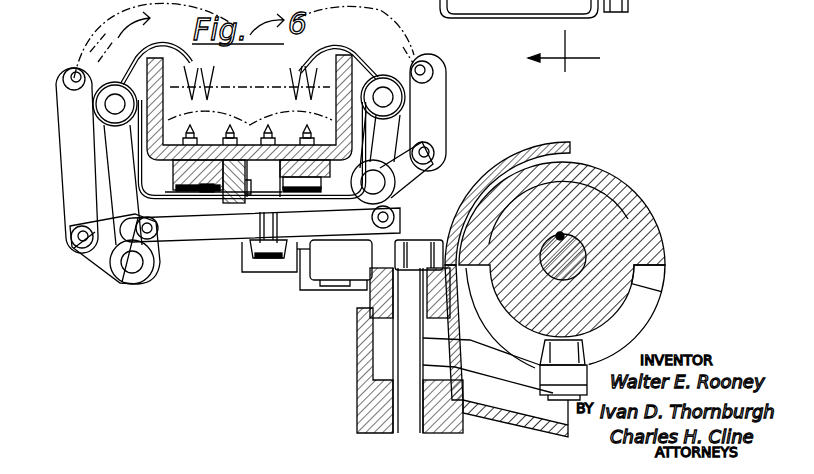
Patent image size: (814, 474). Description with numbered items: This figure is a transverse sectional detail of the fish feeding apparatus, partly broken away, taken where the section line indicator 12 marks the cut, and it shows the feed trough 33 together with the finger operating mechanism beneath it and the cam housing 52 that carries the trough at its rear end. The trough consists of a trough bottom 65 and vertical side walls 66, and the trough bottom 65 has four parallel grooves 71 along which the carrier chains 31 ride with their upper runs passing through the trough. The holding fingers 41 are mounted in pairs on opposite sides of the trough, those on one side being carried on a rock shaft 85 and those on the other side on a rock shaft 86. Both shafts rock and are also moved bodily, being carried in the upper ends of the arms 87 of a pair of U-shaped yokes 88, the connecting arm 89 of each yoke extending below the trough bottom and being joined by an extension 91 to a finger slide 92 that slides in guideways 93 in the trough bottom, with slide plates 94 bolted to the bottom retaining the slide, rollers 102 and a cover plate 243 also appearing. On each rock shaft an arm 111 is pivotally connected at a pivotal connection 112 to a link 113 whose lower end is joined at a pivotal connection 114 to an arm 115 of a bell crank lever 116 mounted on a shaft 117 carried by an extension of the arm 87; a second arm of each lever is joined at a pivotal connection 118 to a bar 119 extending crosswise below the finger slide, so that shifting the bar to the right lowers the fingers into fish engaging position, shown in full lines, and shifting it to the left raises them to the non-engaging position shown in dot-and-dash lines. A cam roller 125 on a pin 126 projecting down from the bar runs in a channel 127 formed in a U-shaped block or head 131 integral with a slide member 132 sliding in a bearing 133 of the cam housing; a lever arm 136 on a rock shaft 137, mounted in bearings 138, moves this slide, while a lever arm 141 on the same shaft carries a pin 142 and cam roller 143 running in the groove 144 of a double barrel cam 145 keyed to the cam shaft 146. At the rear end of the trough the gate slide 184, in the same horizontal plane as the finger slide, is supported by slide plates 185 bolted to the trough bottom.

The section line indicator 12 is at (580, 51).
The cover plate 243 is at (534, 9).
The carrier chains 31 is at (214, 144).
The feed trough 33 is at (262, 74).
The holding fingers 41 is at (160, 46).
The cam housing 52 is at (566, 142).
The trough bottom 65 is at (176, 165).
The vertical side walls 66 is at (158, 86).
The parallel grooves 71 is at (240, 138).
The rock shaft 85 is at (398, 96).
The rock shaft 86 is at (112, 105).
The arms 87 is at (120, 128).
The U-shaped yokes 88 is at (321, 183).
The connecting arm 89 is at (176, 206).
The extension 91 is at (263, 178).
The finger slide 92 is at (285, 145).
The guideways 93 is at (180, 186).
The slide plates 94 is at (320, 197).
The rollers 102 is at (115, 92).
The arm 111 is at (430, 50).
The pivotal connection 112 is at (70, 74).
The link 113 is at (70, 157).
The pivotal connection 114 is at (72, 240).
The arm 115 is at (92, 252).
The bell crank lever 116 is at (125, 282).
The shaft 117 is at (137, 266).
The pivotal connection 118 is at (140, 224).
The bar 119 is at (363, 236).
The cam roller 125 is at (258, 254).
The pin 126 is at (279, 218).
The channel 127 is at (279, 263).
The U-shaped block or head 131 is at (248, 274).
The slide member 132 is at (304, 282).
The bearing 133 is at (330, 284).
The lever arm 136 is at (419, 255).
The rock shaft 137 is at (398, 300).
The bearings 138 is at (360, 415).
The lever arm 141 is at (488, 330).
The pin 142 is at (580, 352).
The cam roller 143 is at (547, 350).
The groove 144 is at (663, 278).
The double barrel cam 145 is at (640, 208).
The cam shaft 146 is at (576, 253).
The gate slide 184 is at (233, 204).
The slide plates 185 is at (207, 194).